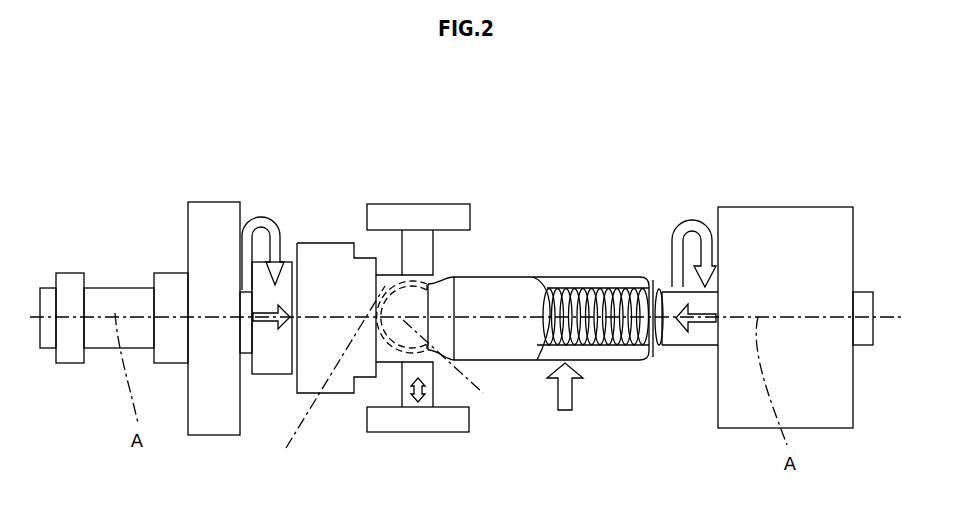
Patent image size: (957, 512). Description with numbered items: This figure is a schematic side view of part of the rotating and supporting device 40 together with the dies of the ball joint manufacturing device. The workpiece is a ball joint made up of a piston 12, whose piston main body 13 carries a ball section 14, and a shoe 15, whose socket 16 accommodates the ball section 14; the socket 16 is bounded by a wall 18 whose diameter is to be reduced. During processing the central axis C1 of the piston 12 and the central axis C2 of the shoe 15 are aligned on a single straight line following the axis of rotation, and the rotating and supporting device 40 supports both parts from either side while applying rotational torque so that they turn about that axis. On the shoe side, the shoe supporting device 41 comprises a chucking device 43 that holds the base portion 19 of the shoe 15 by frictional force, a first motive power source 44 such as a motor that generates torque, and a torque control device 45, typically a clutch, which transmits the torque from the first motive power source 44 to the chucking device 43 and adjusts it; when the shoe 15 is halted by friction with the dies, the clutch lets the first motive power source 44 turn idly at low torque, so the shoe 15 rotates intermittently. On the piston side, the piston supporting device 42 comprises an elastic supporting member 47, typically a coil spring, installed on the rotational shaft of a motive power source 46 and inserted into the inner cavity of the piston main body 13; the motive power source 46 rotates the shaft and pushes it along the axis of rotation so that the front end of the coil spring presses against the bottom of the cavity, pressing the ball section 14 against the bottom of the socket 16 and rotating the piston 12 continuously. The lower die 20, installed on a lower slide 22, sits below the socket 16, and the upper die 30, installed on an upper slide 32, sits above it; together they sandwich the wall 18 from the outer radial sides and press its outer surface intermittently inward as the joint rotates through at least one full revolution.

The piston 12 is at (575, 270).
The piston main body 13 is at (508, 362).
The ball section 14 is at (428, 352).
The shoe 15 is at (367, 277).
The socket 16 is at (413, 281).
The wall 18 is at (423, 297).
The base portion 19 is at (388, 287).
The lower die 20 is at (400, 383).
The lower slide 22 is at (393, 432).
The upper die 30 is at (402, 247).
The upper slide 32 is at (387, 204).
The rotating and supporting device 40 is at (262, 114).
The shoe supporting device 41 is at (177, 233).
The piston supporting device 42 is at (758, 195).
The chucking device 43 is at (322, 237).
The first motive power source 44 is at (107, 288).
The torque control device 45 is at (268, 375).
The motive power source 46 is at (857, 268).
The elastic supporting member 47 is at (622, 347).
The central axis of the ball section C1 is at (452, 369).
The central axis of the socket C2 is at (324, 373).